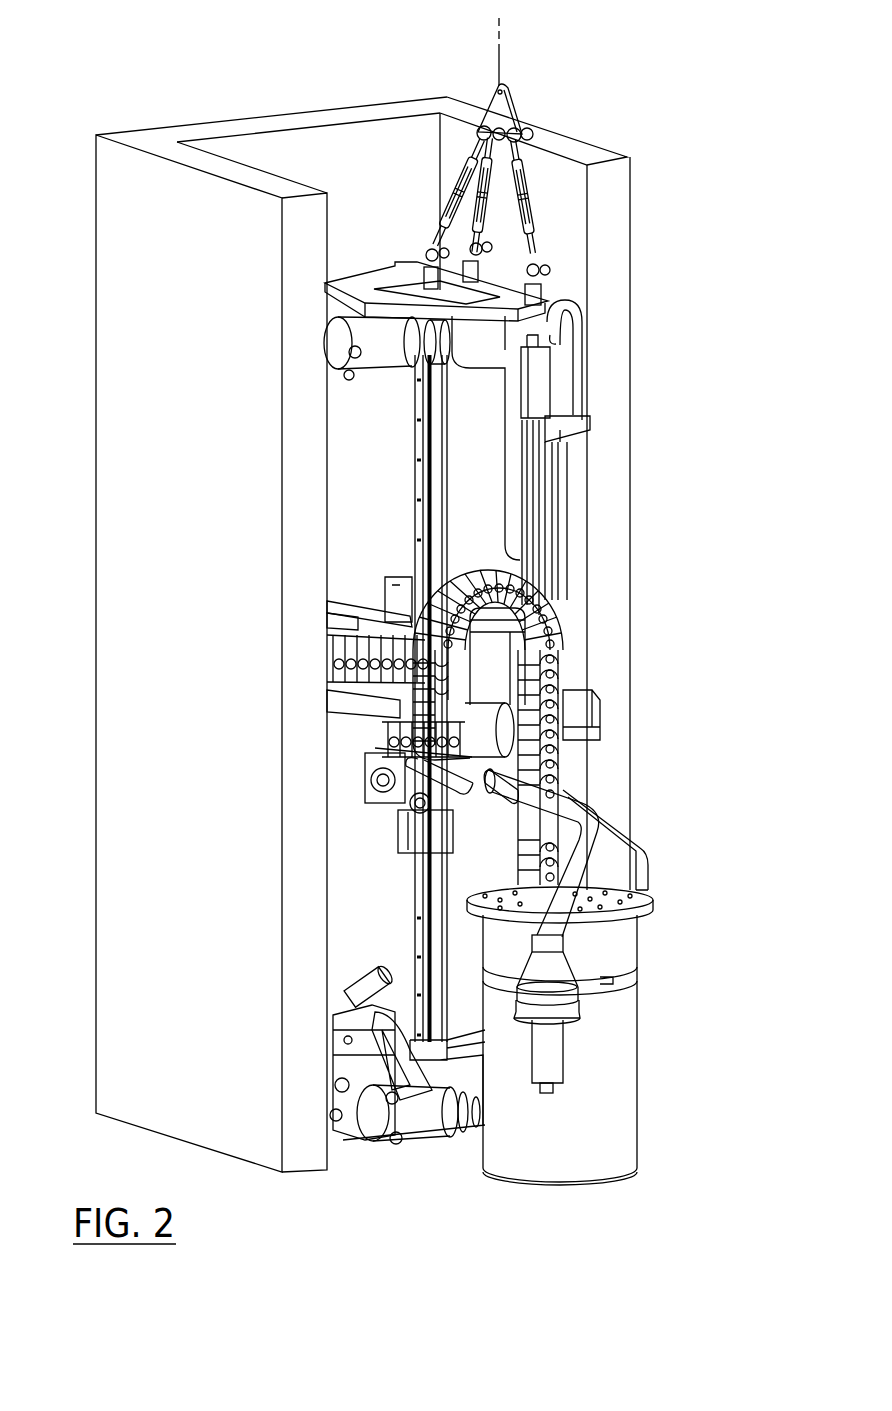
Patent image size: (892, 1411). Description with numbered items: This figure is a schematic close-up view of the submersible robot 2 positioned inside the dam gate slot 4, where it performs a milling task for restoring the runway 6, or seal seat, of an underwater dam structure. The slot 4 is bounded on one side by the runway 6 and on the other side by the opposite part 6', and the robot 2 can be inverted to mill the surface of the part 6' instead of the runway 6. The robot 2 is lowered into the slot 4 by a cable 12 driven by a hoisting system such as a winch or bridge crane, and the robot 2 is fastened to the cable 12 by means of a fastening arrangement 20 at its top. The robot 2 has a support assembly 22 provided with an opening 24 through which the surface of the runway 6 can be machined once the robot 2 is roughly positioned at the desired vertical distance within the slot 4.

The submersible robot 2 is at (445, 1175).
The dam gate slot 4 is at (473, 440).
The runway 6 is at (535, 475).
The part opposite to the runway 6' is at (271, 623).
The cable 12 is at (500, 60).
The fastening arrangement 20 is at (508, 118).
The support assembly 22 is at (563, 342).
The opening 24 is at (485, 505).